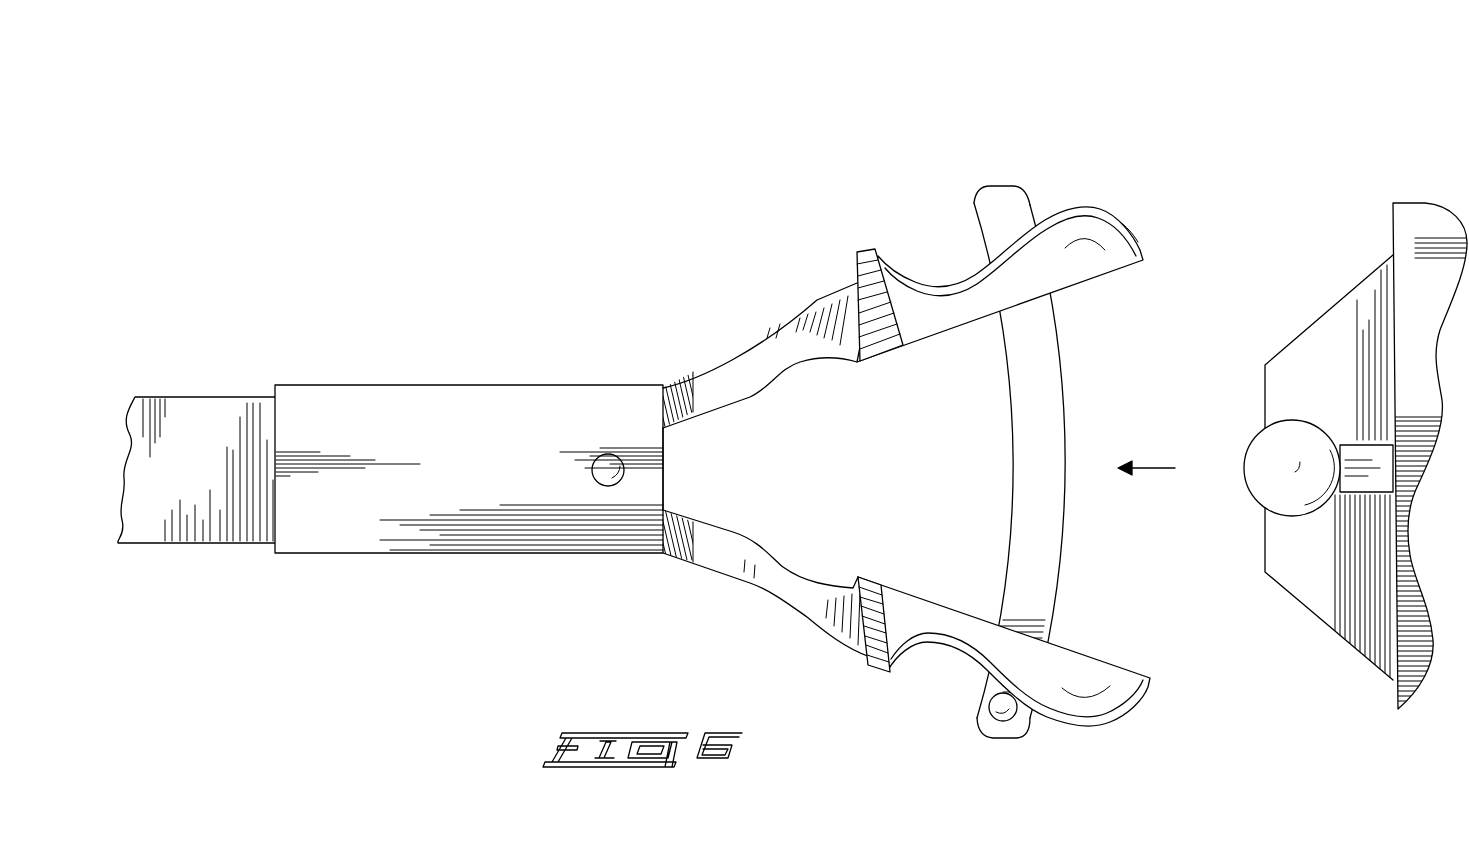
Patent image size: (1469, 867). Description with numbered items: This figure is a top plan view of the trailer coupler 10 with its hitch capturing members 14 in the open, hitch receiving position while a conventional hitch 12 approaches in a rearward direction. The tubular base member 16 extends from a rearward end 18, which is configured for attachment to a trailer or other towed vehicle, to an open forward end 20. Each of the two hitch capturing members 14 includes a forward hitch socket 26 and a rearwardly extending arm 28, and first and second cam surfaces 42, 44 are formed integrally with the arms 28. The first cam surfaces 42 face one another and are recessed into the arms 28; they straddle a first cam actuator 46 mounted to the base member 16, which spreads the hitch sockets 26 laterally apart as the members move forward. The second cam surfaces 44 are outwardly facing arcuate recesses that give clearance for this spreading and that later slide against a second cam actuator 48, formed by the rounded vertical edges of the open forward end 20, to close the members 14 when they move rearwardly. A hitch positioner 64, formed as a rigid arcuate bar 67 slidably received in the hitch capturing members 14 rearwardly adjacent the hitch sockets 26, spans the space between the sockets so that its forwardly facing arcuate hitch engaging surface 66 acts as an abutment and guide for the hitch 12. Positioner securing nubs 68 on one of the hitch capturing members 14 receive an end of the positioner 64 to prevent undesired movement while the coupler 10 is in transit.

The trailer coupler 10 is at (651, 150).
The hitch 12 is at (1272, 443).
The hitch capturing members 14 is at (1104, 208).
The base member 16 is at (420, 386).
The rearward end 18 is at (275, 512).
The open forward end 20 is at (663, 487).
The forward hitch socket 26 is at (1142, 255).
The rearwardly extending arm 28 is at (753, 358).
The first cam surfaces 42 is at (797, 366).
The second cam surfaces 44 is at (790, 323).
The first cam actuator 46 is at (593, 476).
The second cam actuator 48 is at (672, 384).
The hitch positioner 64 is at (1060, 577).
The arcuate hitch engaging surface 66 is at (1068, 447).
The rigid arcuate bar 67 is at (1053, 513).
The positioner securing nubs 68 is at (861, 251).